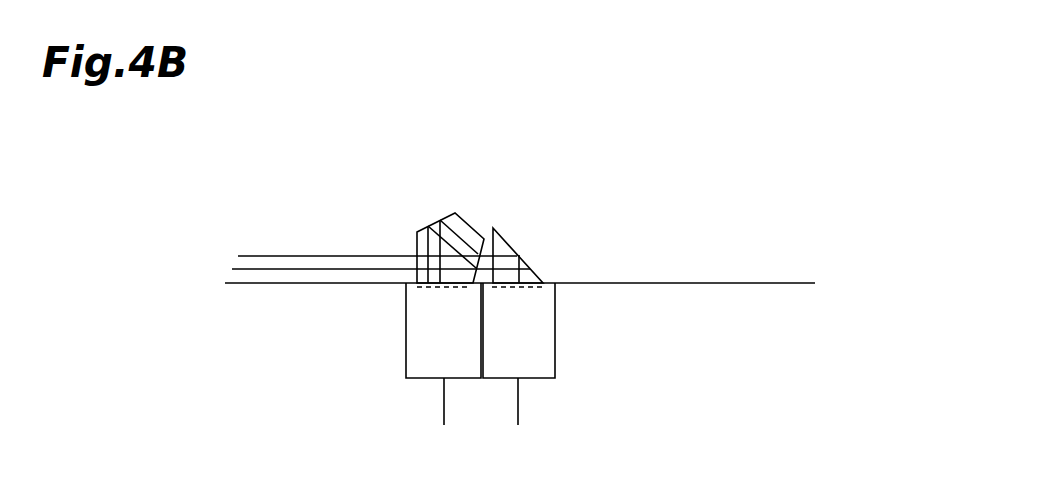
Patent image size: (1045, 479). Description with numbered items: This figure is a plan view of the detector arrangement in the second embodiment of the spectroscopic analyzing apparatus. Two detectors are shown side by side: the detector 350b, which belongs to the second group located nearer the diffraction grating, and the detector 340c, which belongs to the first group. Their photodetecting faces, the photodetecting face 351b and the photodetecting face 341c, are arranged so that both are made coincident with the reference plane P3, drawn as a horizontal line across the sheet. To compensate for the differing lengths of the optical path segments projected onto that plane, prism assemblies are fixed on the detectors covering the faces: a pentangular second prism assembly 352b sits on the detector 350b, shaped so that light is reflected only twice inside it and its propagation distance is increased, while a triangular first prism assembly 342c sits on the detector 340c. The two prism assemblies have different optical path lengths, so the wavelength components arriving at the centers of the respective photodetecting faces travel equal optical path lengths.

The reference plane P3 is at (542, 288).
The second prism assembly 352b is at (456, 214).
The first prism assembly 342c is at (508, 246).
The detector 350b is at (405, 375).
The photodetecting face 351b is at (440, 293).
The detector 340c is at (555, 375).
The photodetecting face 341c is at (522, 293).